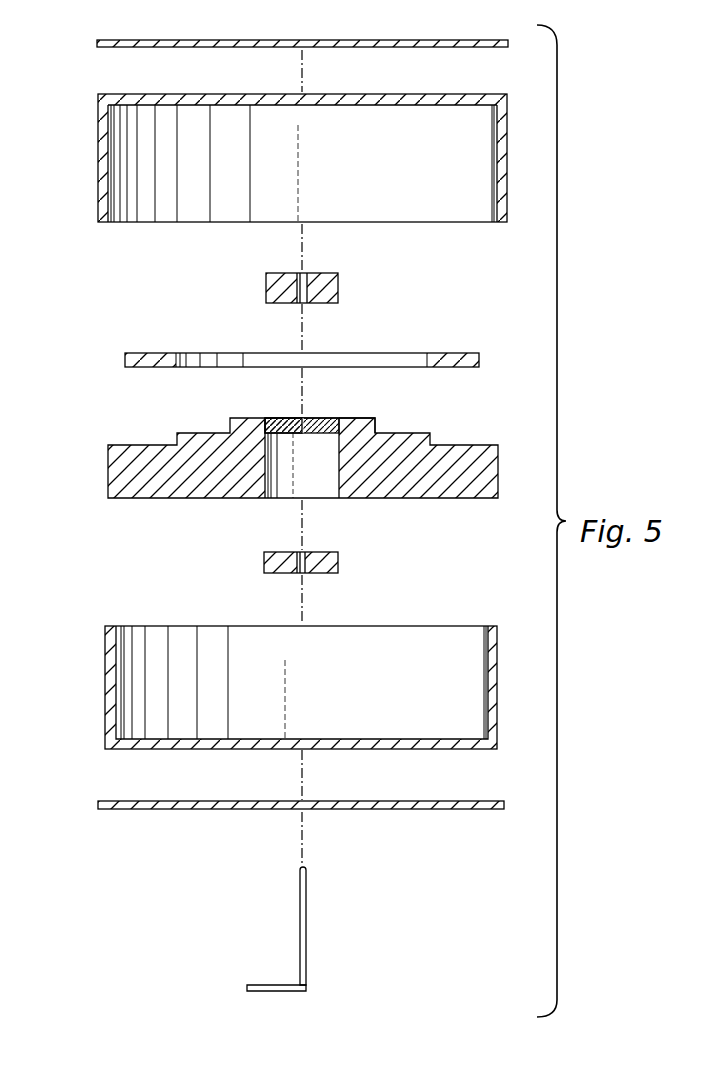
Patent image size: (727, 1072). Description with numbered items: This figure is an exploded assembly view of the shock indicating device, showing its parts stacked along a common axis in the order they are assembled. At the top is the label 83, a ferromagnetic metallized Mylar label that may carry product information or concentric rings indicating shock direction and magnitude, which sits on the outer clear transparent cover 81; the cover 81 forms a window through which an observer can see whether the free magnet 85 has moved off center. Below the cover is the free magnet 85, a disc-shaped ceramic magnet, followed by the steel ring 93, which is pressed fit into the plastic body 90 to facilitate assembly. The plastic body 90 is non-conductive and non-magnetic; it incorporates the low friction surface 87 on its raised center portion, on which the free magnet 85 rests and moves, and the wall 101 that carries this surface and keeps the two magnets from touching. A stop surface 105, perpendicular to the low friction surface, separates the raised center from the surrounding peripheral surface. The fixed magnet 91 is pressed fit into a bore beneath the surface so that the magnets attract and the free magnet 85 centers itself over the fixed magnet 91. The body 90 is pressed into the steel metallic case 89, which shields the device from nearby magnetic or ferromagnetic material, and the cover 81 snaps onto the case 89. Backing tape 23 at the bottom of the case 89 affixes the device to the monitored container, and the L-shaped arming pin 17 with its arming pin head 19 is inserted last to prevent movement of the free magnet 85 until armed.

The label 83 is at (103, 41).
The transparent cover 81 is at (98, 150).
The free magnet 85 is at (266, 290).
The steel ring 93 is at (140, 352).
The plastic body 90 is at (271, 436).
The wall 101 is at (272, 418).
The low friction surface 87 is at (333, 418).
The stop surface 105 is at (377, 421).
The fixed magnet 91 is at (264, 562).
The metallic case 89 is at (105, 668).
The backing tape 23 is at (128, 810).
The arming pin 17 is at (300, 922).
The arming pin head 19 is at (276, 992).